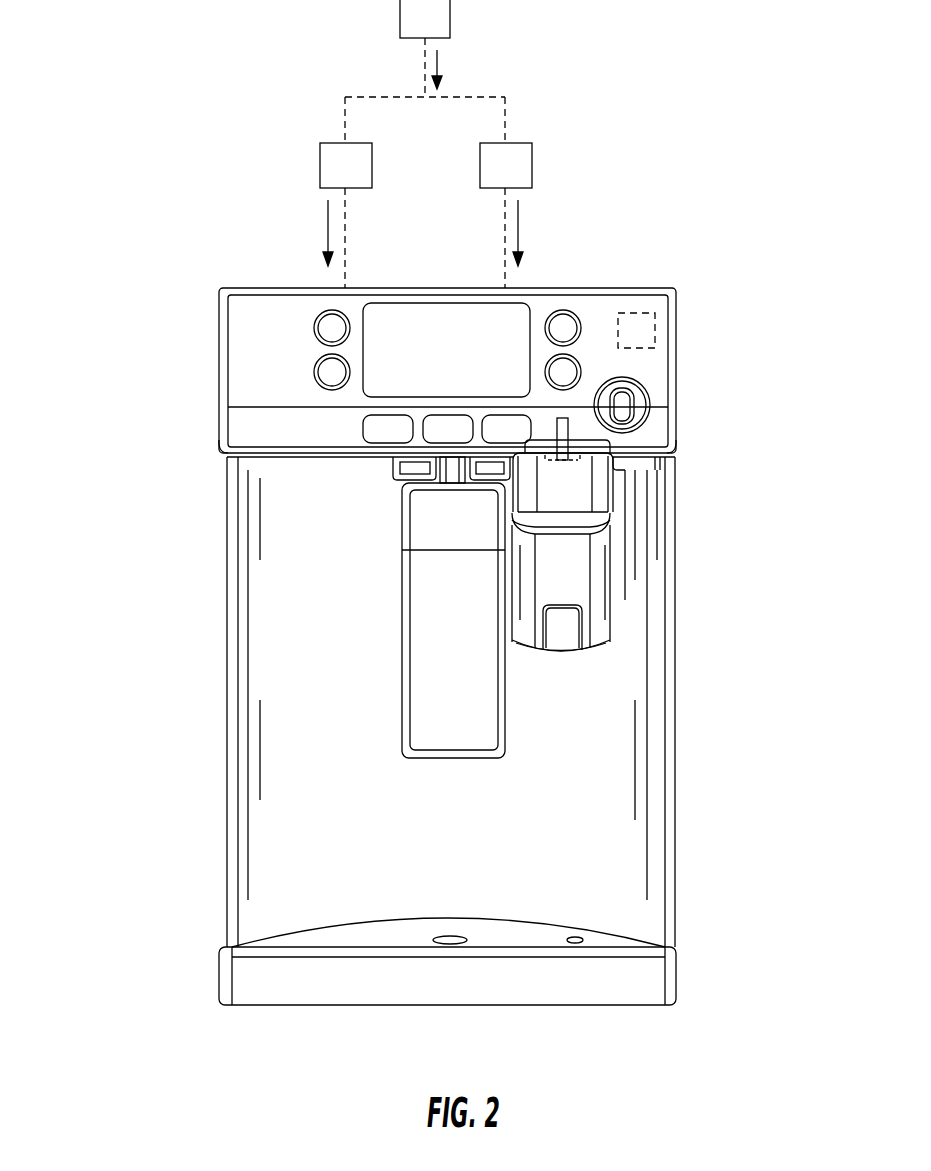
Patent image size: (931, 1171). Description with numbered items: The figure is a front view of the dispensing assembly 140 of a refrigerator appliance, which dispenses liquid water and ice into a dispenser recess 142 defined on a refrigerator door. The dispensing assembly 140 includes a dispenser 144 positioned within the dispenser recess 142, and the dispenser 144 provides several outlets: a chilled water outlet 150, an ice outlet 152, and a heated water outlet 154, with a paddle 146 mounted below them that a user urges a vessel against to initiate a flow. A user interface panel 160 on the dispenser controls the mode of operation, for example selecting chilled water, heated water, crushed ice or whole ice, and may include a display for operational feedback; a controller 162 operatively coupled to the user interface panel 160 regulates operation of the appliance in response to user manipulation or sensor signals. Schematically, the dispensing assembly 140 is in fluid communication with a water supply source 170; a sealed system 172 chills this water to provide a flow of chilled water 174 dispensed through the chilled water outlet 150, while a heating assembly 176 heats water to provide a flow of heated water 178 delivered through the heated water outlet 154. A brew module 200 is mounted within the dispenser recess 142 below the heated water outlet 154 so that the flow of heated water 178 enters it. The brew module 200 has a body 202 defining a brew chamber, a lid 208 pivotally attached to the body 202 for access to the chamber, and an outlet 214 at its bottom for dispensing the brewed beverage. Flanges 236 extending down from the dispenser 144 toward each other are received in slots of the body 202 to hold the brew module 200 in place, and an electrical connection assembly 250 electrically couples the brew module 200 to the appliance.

The dispensing assembly 140 is at (108, 296).
The dispenser recess 142 is at (680, 818).
The dispenser 144 is at (668, 682).
The paddle 146 is at (433, 620).
The chilled water outlet 150 is at (444, 494).
The ice outlet 152 is at (408, 483).
The heated water outlet 154 is at (563, 418).
The user interface panel 160 is at (302, 325).
The controller 162 is at (657, 336).
The water supply source 170 is at (443, 32).
The sealed system 172 is at (364, 178).
The flow of chilled water 174 is at (326, 228).
The heating assembly 176 is at (524, 178).
The flow of heated water 178 is at (520, 228).
The brew module 200 is at (613, 558).
The body 202 is at (600, 613).
The lid 208 is at (575, 498).
The outlet 214 is at (569, 668).
The flanges 236 is at (617, 474).
The electrical connection assembly 250 is at (595, 446).